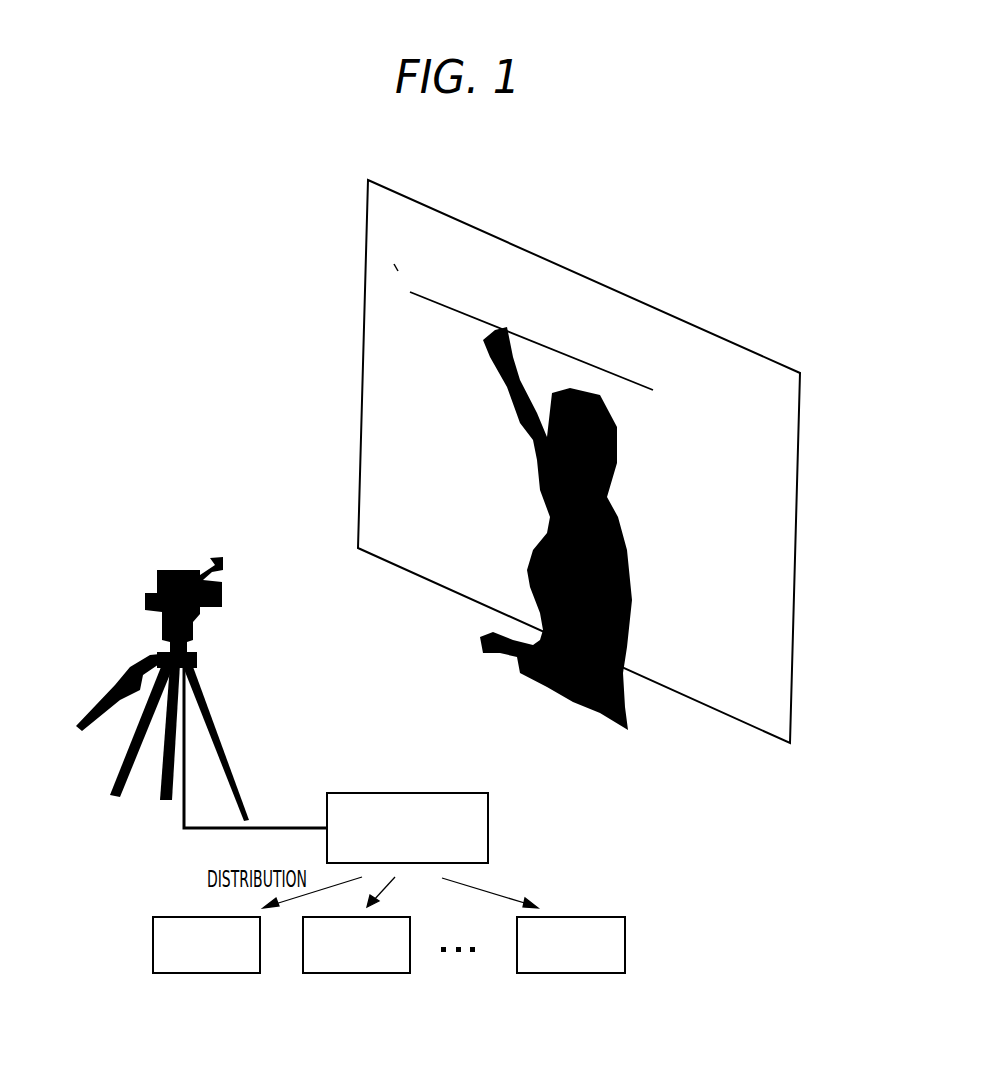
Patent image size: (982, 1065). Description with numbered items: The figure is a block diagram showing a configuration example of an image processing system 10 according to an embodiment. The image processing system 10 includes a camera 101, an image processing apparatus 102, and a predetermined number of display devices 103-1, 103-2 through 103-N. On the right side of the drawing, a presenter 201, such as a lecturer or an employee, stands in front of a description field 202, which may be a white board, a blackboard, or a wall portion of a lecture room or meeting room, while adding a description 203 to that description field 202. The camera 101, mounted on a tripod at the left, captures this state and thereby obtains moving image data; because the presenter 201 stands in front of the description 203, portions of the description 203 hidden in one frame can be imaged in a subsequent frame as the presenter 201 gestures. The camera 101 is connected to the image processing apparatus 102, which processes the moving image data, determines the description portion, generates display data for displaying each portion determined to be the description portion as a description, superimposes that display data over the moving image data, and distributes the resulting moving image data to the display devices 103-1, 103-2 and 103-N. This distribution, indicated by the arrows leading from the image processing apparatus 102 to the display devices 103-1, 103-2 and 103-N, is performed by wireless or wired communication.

The image processing system 10 is at (340, 708).
The camera 101 is at (148, 593).
The image processing apparatus 102 is at (407, 793).
The display device 103-1 is at (202, 975).
The display device 103-2 is at (352, 975).
The display device 103-N is at (568, 975).
The presenter 201 is at (575, 705).
The description field 202 is at (747, 348).
The description 203 is at (393, 404).